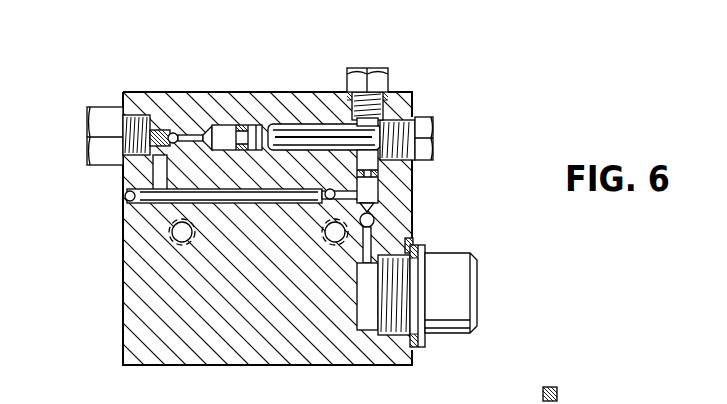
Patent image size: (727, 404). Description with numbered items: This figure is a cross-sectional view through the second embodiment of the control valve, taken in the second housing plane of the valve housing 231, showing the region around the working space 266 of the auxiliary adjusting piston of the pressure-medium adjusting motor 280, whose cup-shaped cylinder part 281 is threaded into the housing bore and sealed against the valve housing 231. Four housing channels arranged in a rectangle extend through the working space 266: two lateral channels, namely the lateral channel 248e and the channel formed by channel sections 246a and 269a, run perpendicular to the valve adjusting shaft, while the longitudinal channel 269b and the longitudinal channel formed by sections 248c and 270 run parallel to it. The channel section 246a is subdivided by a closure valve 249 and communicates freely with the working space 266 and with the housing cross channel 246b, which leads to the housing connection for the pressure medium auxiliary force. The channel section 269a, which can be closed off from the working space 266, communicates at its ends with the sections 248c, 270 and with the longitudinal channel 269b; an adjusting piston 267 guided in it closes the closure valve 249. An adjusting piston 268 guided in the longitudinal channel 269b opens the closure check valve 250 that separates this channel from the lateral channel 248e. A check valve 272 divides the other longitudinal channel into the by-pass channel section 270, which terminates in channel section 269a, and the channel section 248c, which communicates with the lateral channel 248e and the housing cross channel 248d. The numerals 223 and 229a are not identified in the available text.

The valve body block 223 is at (281, 86).
The hatched section indicator 229a is at (582, 391).
The valve housing 231 is at (409, 212).
The channel section 246a is at (355, 266).
The housing cross channel 246b is at (352, 249).
The channel section 248c is at (158, 206).
The housing cross channel 248d is at (305, 184).
The lateral channel 248e is at (140, 190).
The closure valve 249 is at (388, 191).
The closure check valve 250 is at (186, 120).
The working space 266 is at (366, 325).
The adjusting piston 267 is at (380, 165).
The adjusting piston 268 is at (229, 128).
The channel section 269a is at (378, 167).
The longitudinal channel 269b is at (321, 100).
The by-pass channel section 270 is at (346, 205).
The check valve 272 is at (337, 172).
The pressure-medium adjusting motor 280 is at (485, 338).
The cylinder part 281 is at (478, 283).